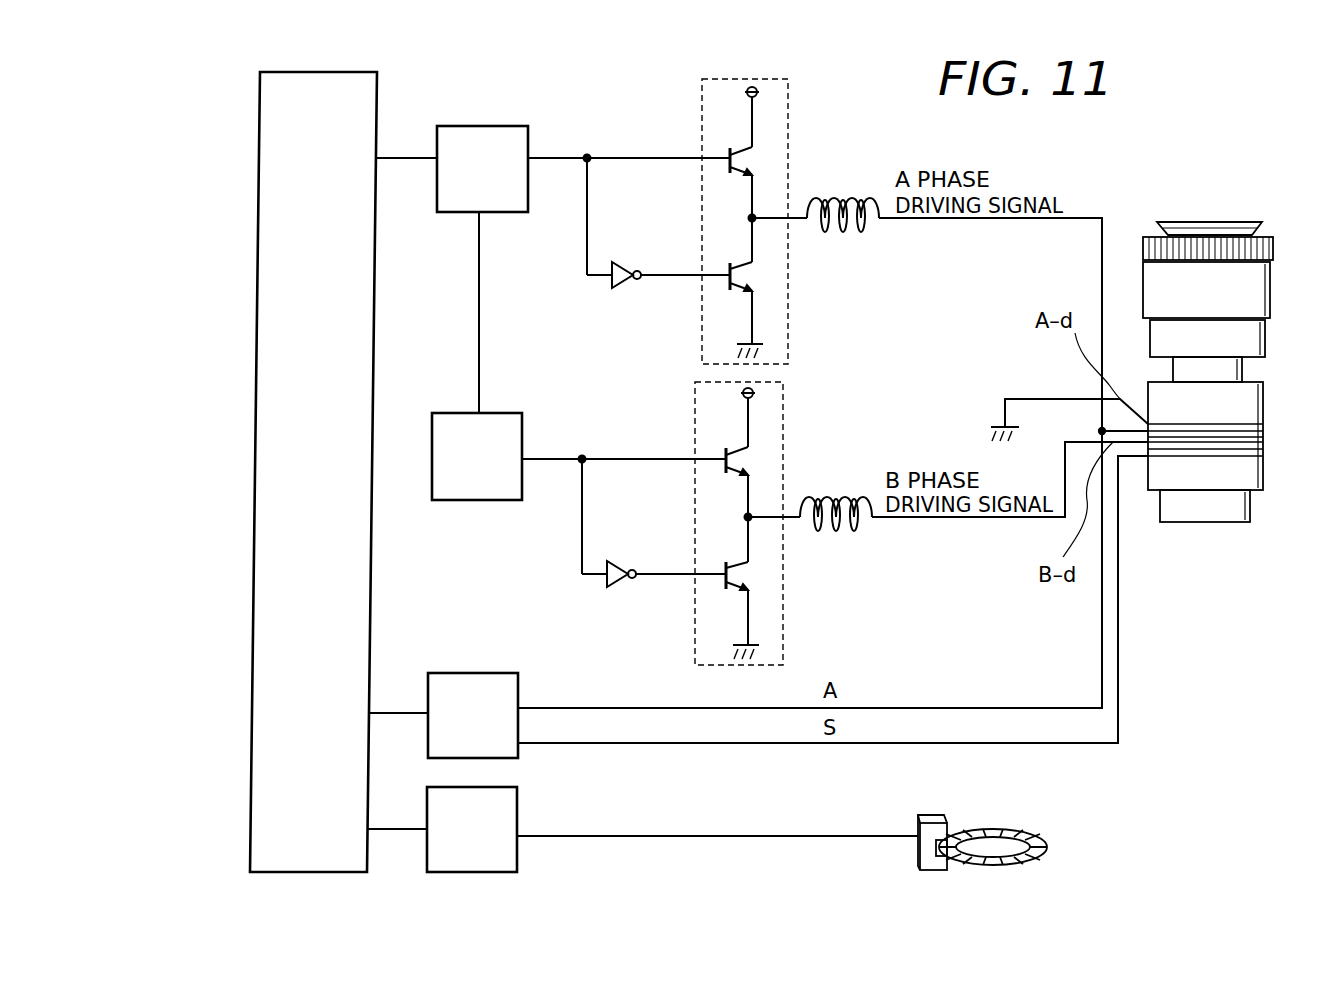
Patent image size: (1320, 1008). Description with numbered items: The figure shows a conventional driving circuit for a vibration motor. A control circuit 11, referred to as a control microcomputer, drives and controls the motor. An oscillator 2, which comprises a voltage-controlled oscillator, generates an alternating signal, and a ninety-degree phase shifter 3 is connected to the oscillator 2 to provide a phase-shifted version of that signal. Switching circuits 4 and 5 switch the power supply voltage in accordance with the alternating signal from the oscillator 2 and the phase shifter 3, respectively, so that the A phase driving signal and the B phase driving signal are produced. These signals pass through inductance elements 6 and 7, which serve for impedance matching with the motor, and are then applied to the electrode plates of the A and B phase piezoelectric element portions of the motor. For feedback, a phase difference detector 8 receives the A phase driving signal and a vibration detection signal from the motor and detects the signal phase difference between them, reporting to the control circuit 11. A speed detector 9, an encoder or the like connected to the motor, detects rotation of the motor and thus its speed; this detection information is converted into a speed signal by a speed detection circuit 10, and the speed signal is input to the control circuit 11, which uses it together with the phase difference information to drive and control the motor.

The oscillator 2 is at (493, 133).
The 90° phase shifter 3 is at (498, 418).
The switching circuit 4 is at (788, 93).
The switching circuit 5 is at (783, 398).
The inductance element 6 is at (855, 197).
The inductance element 7 is at (828, 498).
The phase difference detector 8 is at (488, 677).
The speed detector 9 is at (1003, 830).
The speed detection circuit 10 is at (512, 807).
The control circuit 11 is at (257, 427).